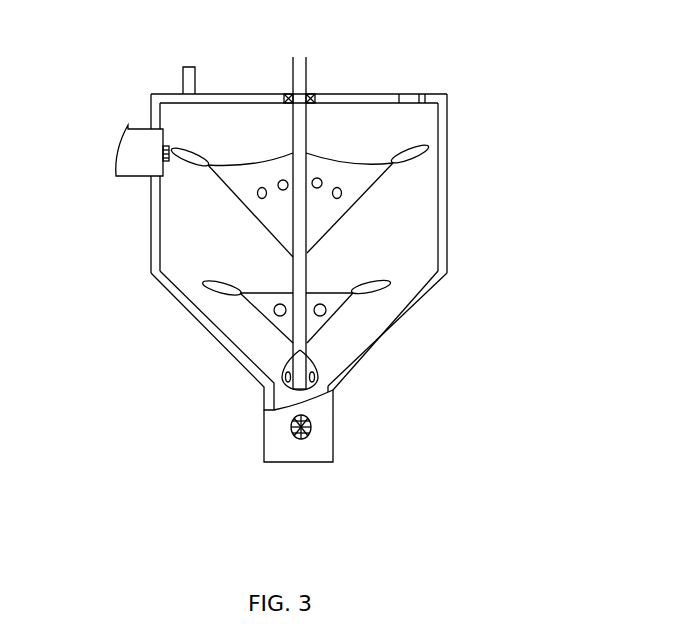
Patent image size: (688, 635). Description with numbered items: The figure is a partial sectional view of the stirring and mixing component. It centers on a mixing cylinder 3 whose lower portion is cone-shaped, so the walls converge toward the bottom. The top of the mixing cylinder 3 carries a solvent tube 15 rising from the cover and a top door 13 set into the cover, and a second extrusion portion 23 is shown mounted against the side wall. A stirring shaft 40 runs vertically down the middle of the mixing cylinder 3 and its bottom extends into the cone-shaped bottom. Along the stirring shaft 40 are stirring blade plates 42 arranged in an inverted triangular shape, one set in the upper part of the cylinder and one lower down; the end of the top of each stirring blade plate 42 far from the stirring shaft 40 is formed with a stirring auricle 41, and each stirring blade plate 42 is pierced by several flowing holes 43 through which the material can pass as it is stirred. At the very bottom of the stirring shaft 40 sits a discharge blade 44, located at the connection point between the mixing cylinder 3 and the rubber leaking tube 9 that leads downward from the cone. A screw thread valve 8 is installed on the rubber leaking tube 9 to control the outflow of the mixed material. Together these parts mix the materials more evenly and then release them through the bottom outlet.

The mixing cylinder 3 is at (447, 230).
The screw thread valve 8 is at (307, 437).
The rubber leaking tube 9 is at (273, 437).
The top door 13 is at (410, 93).
The solvent tube 15 is at (193, 70).
The second extrusion portion 23 is at (132, 162).
The stirring shaft 40 is at (300, 87).
The stirring auricle 41 is at (423, 150).
The stirring blade plate 42 is at (347, 205).
The flowing hole 43 is at (319, 179).
The discharge blade 44 is at (320, 377).